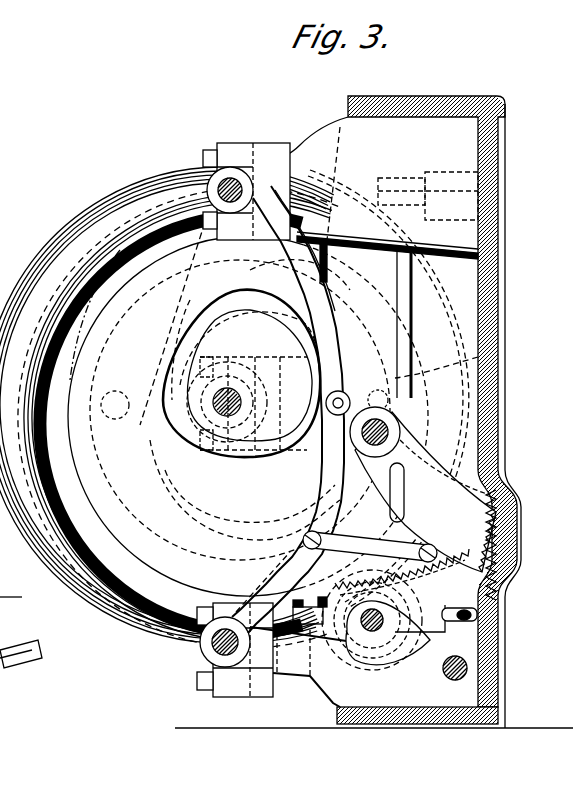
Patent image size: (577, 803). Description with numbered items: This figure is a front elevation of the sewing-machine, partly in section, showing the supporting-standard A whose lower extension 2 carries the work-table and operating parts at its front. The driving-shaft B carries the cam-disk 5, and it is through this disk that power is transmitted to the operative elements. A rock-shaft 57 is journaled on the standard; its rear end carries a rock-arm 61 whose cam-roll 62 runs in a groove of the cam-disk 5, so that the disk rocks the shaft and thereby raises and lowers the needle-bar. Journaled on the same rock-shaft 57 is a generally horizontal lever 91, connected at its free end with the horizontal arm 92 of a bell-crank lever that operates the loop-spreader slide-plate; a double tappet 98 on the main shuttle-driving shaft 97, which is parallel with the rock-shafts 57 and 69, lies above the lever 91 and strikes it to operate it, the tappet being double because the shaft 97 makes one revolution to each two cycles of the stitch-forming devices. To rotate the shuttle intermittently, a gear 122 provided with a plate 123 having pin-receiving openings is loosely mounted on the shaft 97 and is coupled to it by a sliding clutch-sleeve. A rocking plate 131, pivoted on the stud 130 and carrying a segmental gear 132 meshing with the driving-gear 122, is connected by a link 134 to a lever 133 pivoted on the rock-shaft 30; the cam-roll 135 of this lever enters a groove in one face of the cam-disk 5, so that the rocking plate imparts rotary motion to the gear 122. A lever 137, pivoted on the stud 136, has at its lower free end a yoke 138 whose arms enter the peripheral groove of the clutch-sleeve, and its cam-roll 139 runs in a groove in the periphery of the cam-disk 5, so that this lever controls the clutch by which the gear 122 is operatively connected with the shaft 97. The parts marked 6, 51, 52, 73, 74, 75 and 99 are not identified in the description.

The supporting-standard A is at (423, 97).
The driving-shaft B is at (222, 408).
The lower extension 2 is at (4, 161).
The cam-disk 5 is at (248, 416).
The wheel rim 6 is at (170, 407).
The rock-shaft 30 is at (235, 185).
The upper lever arm 51 is at (196, 240).
The pin 52 is at (152, 333).
The rock-shaft 57 is at (222, 650).
The rock-arm 61 is at (263, 582).
The cam-roll 62 is at (478, 357).
The rock-shaft 69 is at (470, 672).
The adjacent figure part 73 is at (10, 634).
The adjacent figure part 74 is at (21, 669).
The adjacent figure part 75 is at (11, 606).
The lever 91 is at (305, 667).
The horizontal arm 92 is at (480, 617).
The main shuttle-driving shaft 97 is at (372, 635).
The double tappet 98 is at (395, 650).
The spring 99 is at (490, 576).
The driving-gear 122 is at (402, 572).
The plate 123 is at (325, 583).
The stud 130 is at (390, 433).
The rocking plate 131 is at (470, 492).
The segmental gear 132 is at (500, 540).
The lever 133 is at (282, 252).
The link 134 is at (370, 546).
The cam-roll 135 is at (325, 412).
The stud 136 is at (410, 180).
The lever 137 is at (411, 318).
The yoke 138 is at (428, 630).
The cam-roll 139 is at (392, 402).